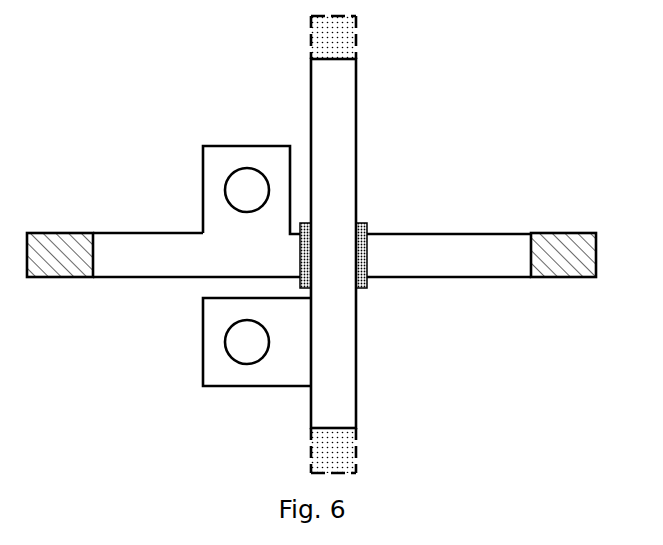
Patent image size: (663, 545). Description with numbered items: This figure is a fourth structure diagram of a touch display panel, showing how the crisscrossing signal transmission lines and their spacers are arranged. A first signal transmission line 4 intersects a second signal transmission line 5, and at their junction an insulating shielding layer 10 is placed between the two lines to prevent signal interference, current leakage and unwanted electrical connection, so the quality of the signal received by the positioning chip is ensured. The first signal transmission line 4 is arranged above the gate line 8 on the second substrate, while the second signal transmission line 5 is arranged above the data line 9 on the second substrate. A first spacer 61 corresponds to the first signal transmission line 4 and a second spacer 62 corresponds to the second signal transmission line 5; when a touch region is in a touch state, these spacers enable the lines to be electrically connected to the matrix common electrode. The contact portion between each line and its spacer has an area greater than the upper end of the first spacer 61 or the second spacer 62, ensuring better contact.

The first signal transmission line 4 is at (420, 277).
The second signal transmission line 5 is at (332, 125).
The gate line 8 is at (552, 233).
The data line 9 is at (311, 37).
The insulating shielding layer 10 is at (367, 222).
The first spacer 61 is at (247, 191).
The second spacer 62 is at (247, 342).